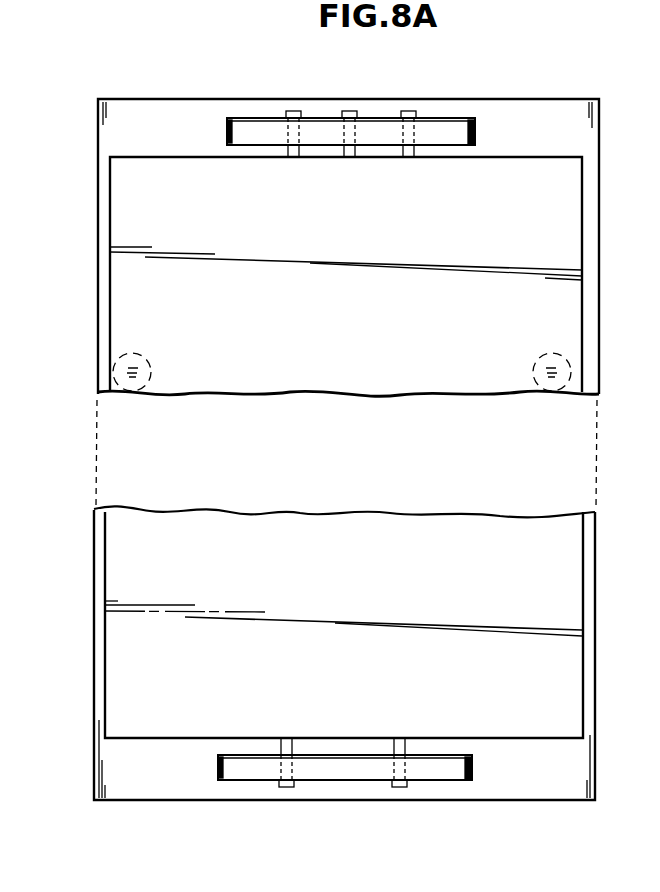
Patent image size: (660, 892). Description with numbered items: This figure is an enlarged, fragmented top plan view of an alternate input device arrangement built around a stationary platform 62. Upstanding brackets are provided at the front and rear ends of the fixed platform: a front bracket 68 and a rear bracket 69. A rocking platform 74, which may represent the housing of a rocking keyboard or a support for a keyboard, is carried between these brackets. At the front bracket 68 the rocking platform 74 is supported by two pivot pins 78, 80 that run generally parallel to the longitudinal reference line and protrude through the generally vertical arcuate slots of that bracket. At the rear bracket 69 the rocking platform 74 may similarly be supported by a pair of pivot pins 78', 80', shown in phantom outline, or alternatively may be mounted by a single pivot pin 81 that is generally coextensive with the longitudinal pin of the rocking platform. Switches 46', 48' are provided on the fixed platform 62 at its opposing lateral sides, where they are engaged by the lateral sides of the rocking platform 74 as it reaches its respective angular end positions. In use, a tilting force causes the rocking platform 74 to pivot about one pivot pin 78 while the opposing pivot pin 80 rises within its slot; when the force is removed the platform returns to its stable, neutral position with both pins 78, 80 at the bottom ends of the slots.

The stationary platform 62 is at (505, 787).
The rocking platform 74 is at (370, 349).
The rear bracket 69 is at (470, 119).
The front bracket 68 is at (330, 768).
The pivot pin 78' is at (266, 106).
The single pivot pin 81 is at (350, 111).
The pivot pin 80' is at (436, 106).
The pivot pin 78 is at (260, 797).
The pivot pin 80 is at (427, 797).
The switch 46' is at (90, 372).
The switch 48' is at (594, 372).